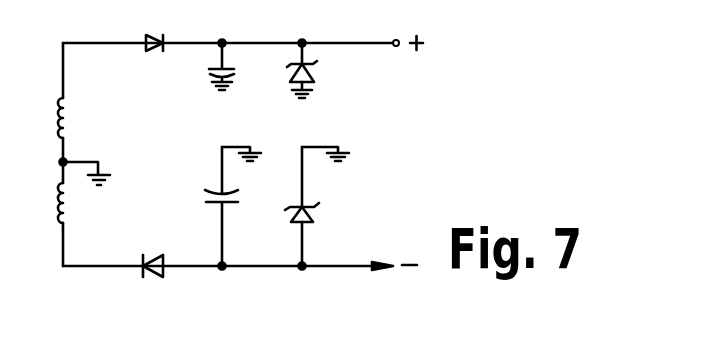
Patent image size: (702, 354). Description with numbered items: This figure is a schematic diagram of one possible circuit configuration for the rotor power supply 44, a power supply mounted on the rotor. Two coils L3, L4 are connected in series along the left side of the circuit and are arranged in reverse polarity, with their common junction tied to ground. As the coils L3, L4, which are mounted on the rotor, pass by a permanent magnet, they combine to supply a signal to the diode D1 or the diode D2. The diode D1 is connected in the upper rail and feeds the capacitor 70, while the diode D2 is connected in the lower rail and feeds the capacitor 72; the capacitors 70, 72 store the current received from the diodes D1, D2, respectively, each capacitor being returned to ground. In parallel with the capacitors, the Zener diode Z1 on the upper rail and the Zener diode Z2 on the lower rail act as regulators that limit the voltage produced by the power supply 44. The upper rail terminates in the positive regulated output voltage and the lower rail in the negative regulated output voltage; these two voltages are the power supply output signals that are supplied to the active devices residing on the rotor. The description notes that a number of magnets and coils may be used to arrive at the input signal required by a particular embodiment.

The rotor power supply 44 is at (403, 167).
The capacitor 70 is at (233, 61).
The capacitor 72 is at (232, 204).
The diode D1 is at (152, 51).
The diode D2 is at (143, 270).
The Zener diode Z1 is at (316, 80).
The Zener diode Z2 is at (316, 216).
The coil L3 is at (48, 118).
The coil L4 is at (45, 204).